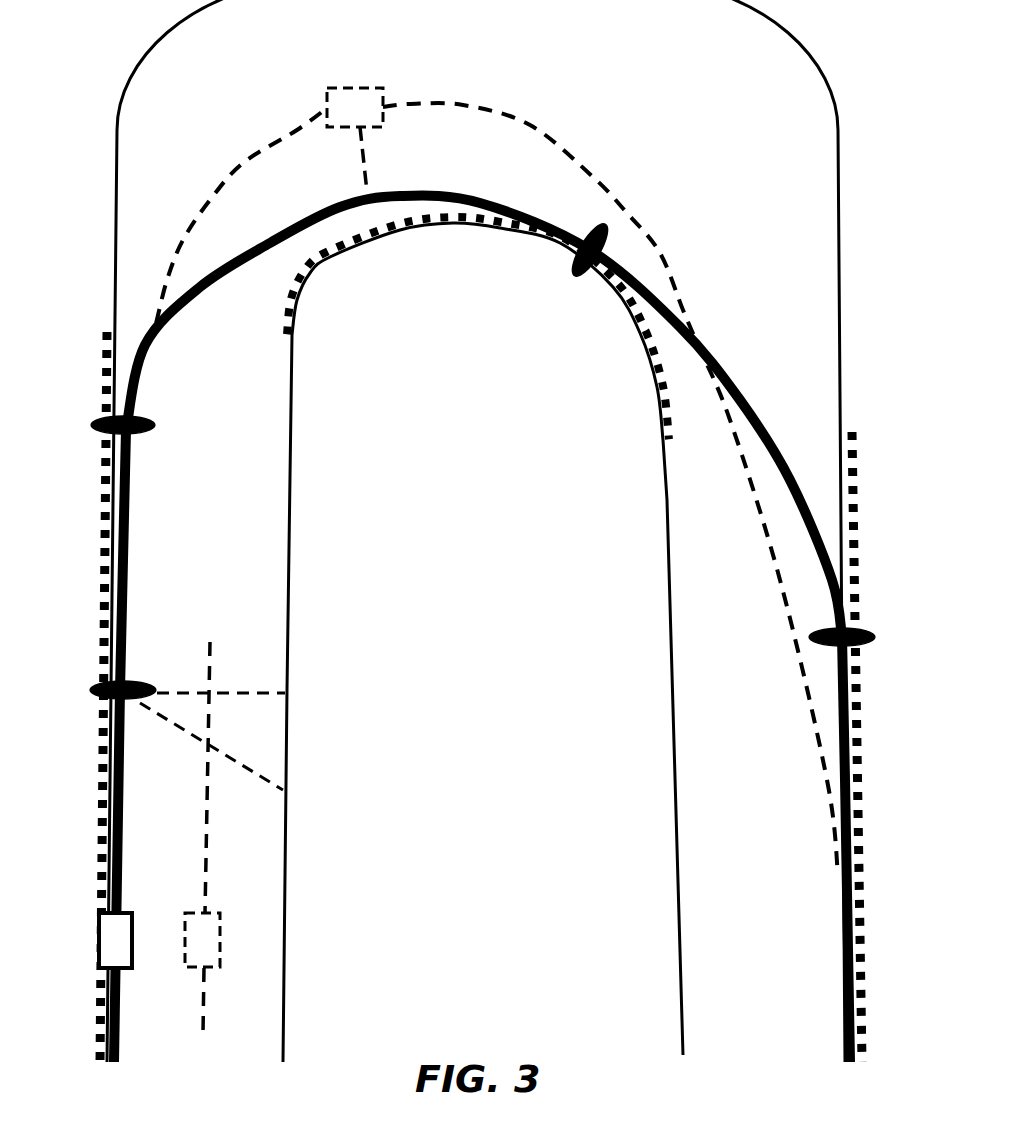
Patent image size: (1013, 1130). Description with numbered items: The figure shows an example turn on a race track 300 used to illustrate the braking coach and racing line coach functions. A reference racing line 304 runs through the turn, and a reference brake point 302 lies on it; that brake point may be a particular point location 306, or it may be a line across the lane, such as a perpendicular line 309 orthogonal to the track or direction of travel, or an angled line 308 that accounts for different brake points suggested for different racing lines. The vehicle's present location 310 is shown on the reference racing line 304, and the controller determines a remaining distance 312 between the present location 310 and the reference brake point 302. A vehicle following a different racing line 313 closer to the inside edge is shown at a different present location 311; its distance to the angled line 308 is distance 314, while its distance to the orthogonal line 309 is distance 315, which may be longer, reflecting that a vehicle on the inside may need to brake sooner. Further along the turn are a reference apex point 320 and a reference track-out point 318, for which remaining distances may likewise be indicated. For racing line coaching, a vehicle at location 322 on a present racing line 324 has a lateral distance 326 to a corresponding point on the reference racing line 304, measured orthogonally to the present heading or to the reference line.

The race track 300 is at (600, 1045).
The reference brake point 302 is at (98, 684).
The reference racing line 304 is at (206, 278).
The particular point location 306 is at (135, 418).
The angled line 308 is at (258, 775).
The perpendicular line 309 is at (258, 693).
The present location 310 is at (98, 940).
The different present location 311 is at (220, 935).
The remaining distance 312 is at (92, 698).
The racing line 313 is at (206, 995).
The distance 314 is at (202, 743).
The distance 315 is at (209, 777).
The reference track-out point 318 is at (826, 645).
The reference apex point 320 is at (578, 272).
The location 322 is at (350, 88).
The present racing line 324 is at (463, 108).
The lateral distance 326 is at (362, 126).